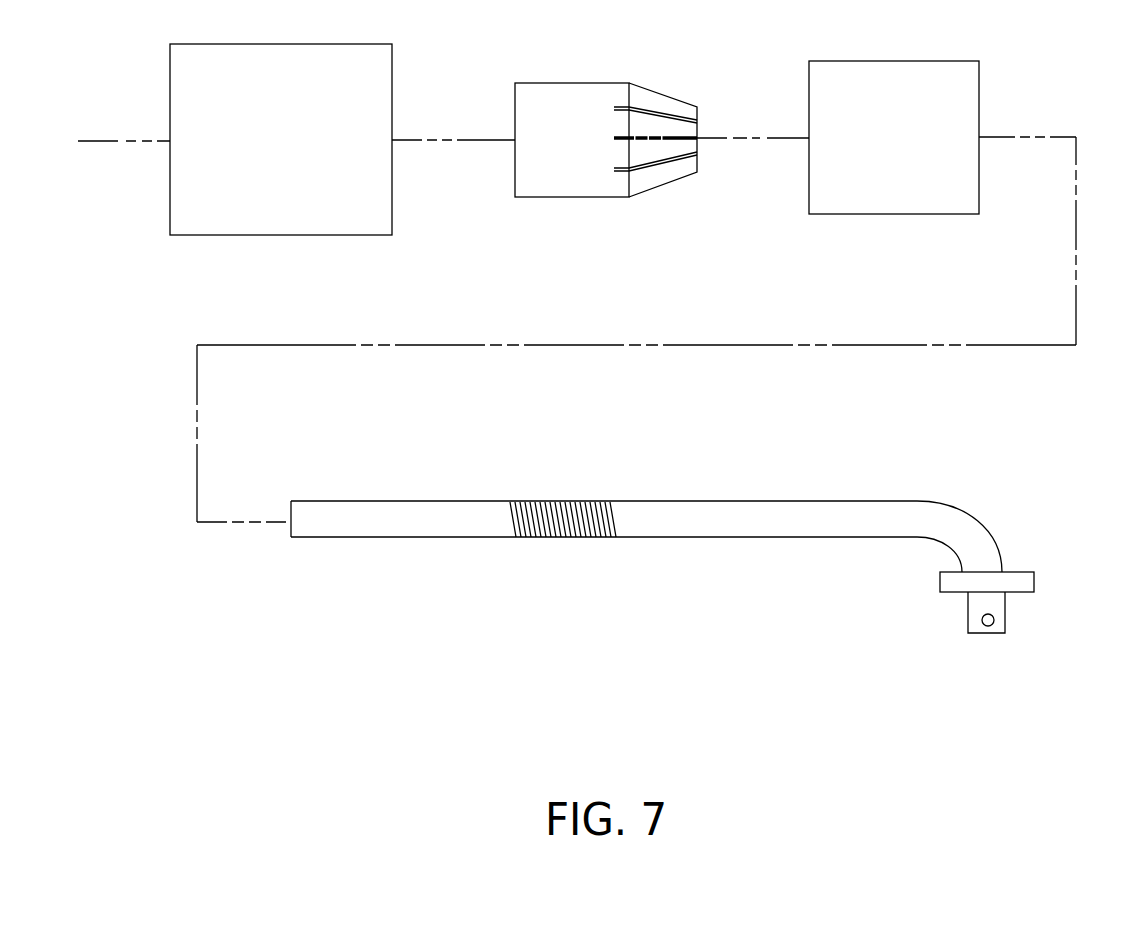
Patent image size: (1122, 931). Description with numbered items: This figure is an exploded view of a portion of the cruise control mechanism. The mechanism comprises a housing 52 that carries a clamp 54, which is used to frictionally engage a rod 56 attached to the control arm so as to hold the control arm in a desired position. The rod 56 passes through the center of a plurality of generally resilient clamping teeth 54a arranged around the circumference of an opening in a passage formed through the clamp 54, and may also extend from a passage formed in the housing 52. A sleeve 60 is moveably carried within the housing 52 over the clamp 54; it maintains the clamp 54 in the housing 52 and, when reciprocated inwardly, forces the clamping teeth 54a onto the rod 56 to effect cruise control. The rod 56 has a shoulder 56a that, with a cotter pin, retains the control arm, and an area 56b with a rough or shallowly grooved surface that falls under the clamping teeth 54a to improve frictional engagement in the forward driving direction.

The housing 52 is at (262, 153).
The clamp 54 is at (553, 152).
The clamping teeth 54a is at (665, 173).
The sleeve 60 is at (875, 150).
The rod 56 is at (782, 500).
The shoulder 56a is at (938, 582).
The area 56b is at (608, 519).